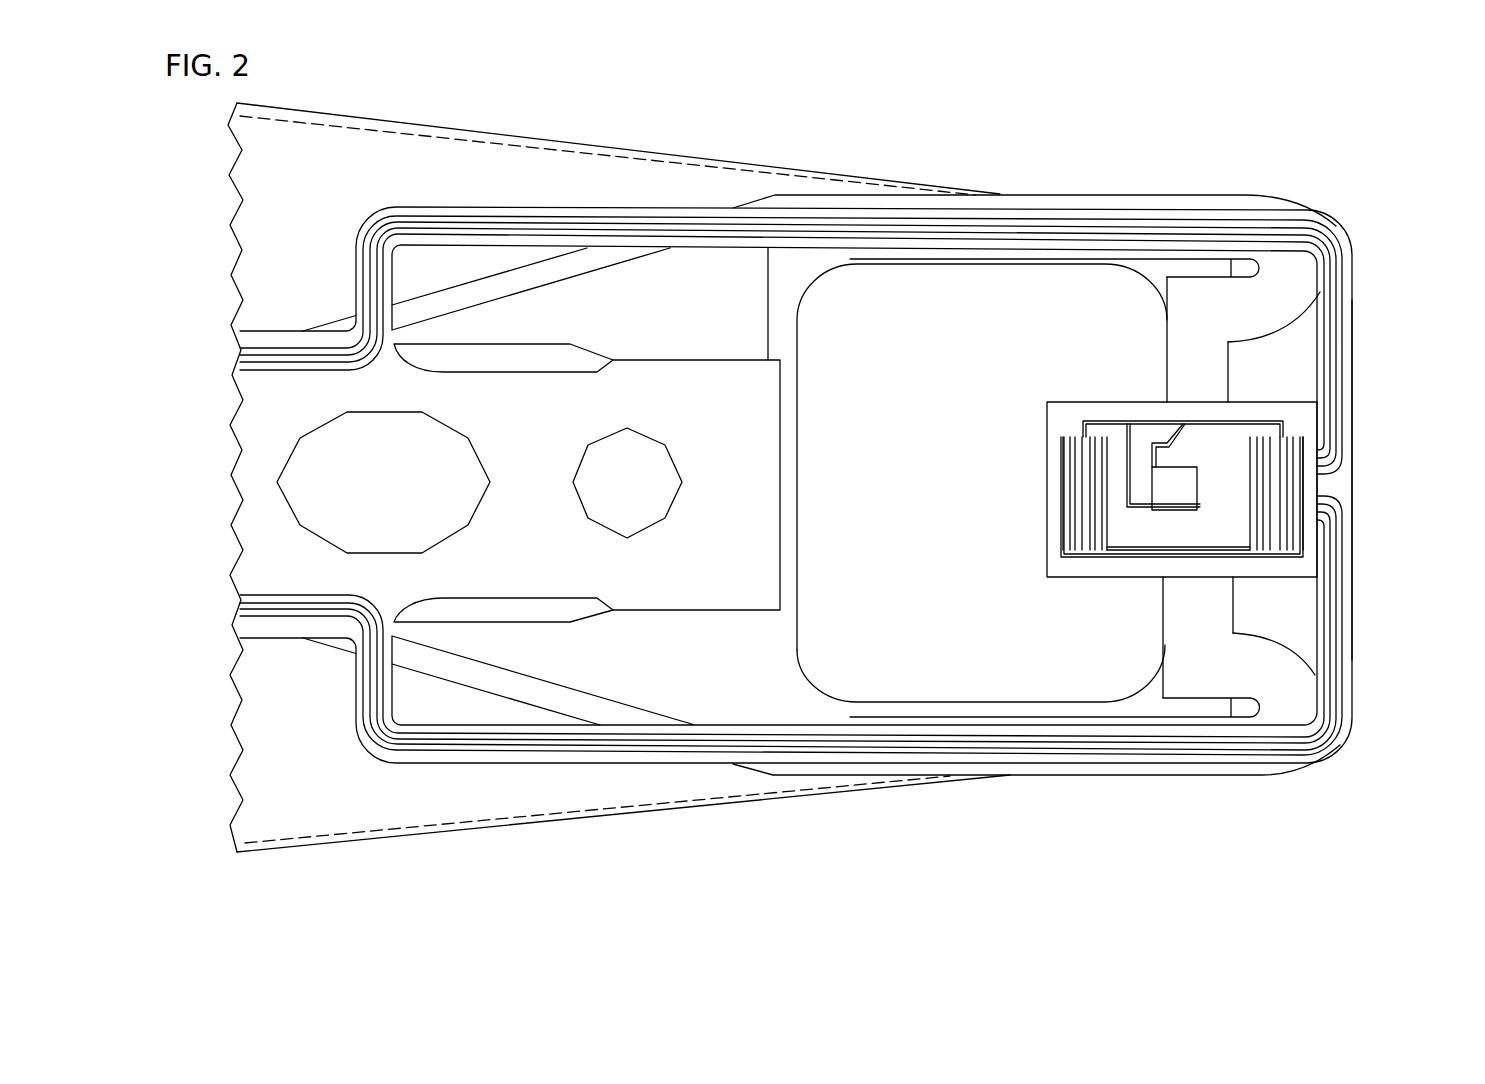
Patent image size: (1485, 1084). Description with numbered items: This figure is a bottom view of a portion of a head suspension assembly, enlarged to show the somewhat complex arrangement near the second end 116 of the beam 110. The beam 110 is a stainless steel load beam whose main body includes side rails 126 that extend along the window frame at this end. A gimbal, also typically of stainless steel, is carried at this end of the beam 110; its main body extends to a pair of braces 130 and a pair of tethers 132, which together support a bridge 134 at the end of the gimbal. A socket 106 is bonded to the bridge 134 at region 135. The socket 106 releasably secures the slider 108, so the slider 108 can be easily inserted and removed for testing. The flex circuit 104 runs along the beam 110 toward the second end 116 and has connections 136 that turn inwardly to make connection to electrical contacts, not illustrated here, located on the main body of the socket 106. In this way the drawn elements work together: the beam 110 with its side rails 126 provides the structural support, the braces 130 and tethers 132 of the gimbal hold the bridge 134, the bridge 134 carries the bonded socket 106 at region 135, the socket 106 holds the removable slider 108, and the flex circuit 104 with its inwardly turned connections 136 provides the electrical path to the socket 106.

The flex circuit 104 is at (547, 763).
The socket 106 is at (1243, 459).
The slider 108 is at (1170, 483).
The beam 110 is at (308, 787).
The second end 116 is at (1150, 120).
The side rails 126 is at (353, 127).
The braces 130 is at (573, 267).
The tethers 132 is at (780, 337).
The bridge 134 is at (1213, 297).
The region 135 is at (1193, 382).
The connections 136 is at (1353, 328).